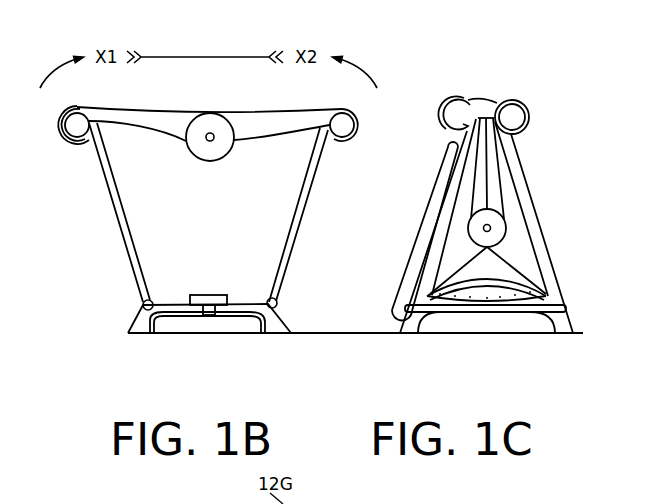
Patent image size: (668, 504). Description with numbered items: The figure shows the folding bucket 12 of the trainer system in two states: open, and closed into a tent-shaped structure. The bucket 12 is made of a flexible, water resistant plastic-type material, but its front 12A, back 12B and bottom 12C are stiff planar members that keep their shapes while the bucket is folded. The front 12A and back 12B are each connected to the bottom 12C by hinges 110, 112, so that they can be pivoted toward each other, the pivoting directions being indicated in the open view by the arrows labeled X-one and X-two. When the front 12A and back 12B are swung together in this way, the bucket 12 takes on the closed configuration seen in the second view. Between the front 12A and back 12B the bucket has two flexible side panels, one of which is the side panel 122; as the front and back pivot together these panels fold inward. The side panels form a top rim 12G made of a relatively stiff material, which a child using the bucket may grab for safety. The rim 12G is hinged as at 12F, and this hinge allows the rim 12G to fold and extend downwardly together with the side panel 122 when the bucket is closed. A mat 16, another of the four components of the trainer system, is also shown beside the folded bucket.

In FIG. 1B, the bucket 12 is at (116, 246).
In FIG. 1B, the front 12A is at (118, 208).
In FIG. 1C, the front 12A is at (438, 226).
In FIG. 1B, the back 12B is at (296, 218).
In FIG. 1C, the back 12B is at (534, 227).
In FIG. 1B, the bottom 12C is at (203, 313).
In FIG. 1C, the bottom 12C is at (485, 319).
In FIG. 1B, the hinge of rim 12F is at (213, 143).
In FIG. 1C, the hinge of rim 12F is at (492, 227).
In FIG. 1B, the top rim 12G is at (140, 126).
In FIG. 1C, the top rim 12G is at (483, 157).
In FIG. 1C, the mat 16 is at (442, 193).
In FIG. 1B, the hinge 110 is at (142, 304).
In FIG. 1B, the hinge 112 is at (278, 305).
In FIG. 1C, the side panel 122 is at (450, 283).